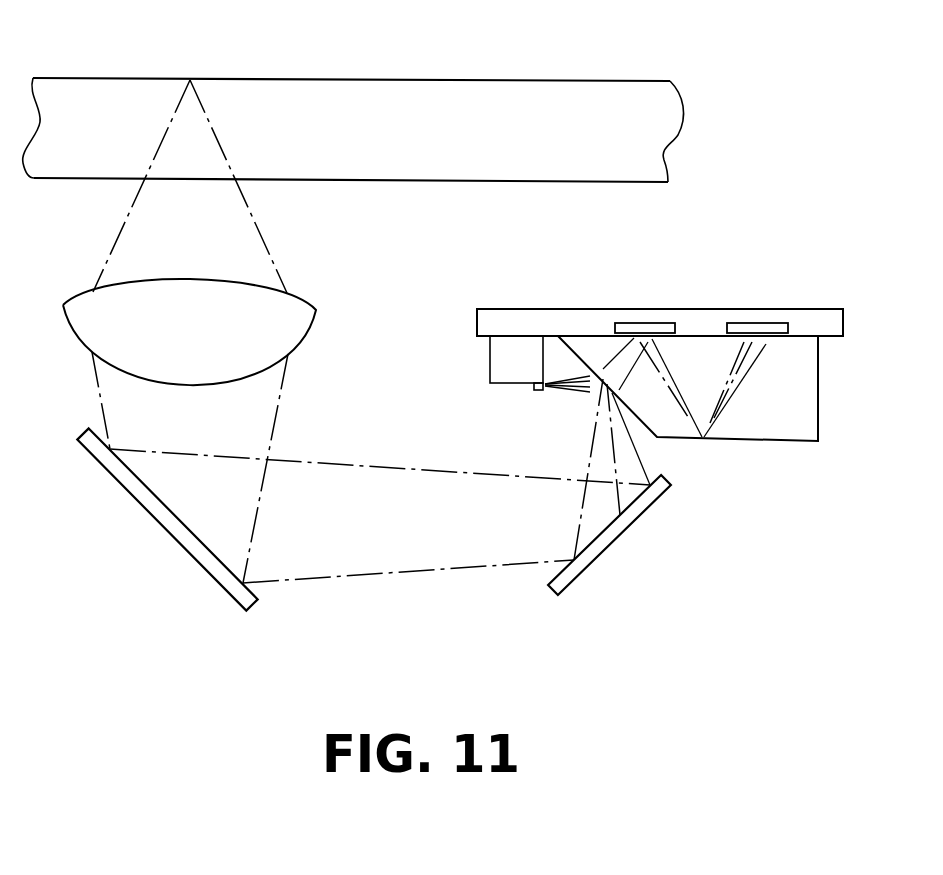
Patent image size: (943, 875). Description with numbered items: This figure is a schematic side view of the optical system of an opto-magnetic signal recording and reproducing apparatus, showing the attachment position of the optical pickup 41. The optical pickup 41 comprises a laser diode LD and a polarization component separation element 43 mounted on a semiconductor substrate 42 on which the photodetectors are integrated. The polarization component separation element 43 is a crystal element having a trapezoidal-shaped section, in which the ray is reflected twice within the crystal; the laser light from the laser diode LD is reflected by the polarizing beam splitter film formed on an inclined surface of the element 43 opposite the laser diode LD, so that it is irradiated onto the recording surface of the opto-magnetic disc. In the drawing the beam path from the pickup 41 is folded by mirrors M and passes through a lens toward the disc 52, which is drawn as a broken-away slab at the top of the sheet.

The photosensitive drum / recording medium 52 is at (653, 147).
The optical pickup 41 is at (772, 310).
The semiconductor substrate 42 is at (646, 310).
The polarization component separation element 43 is at (788, 395).
The laser diode LD is at (538, 391).
The mirror M is at (228, 594).